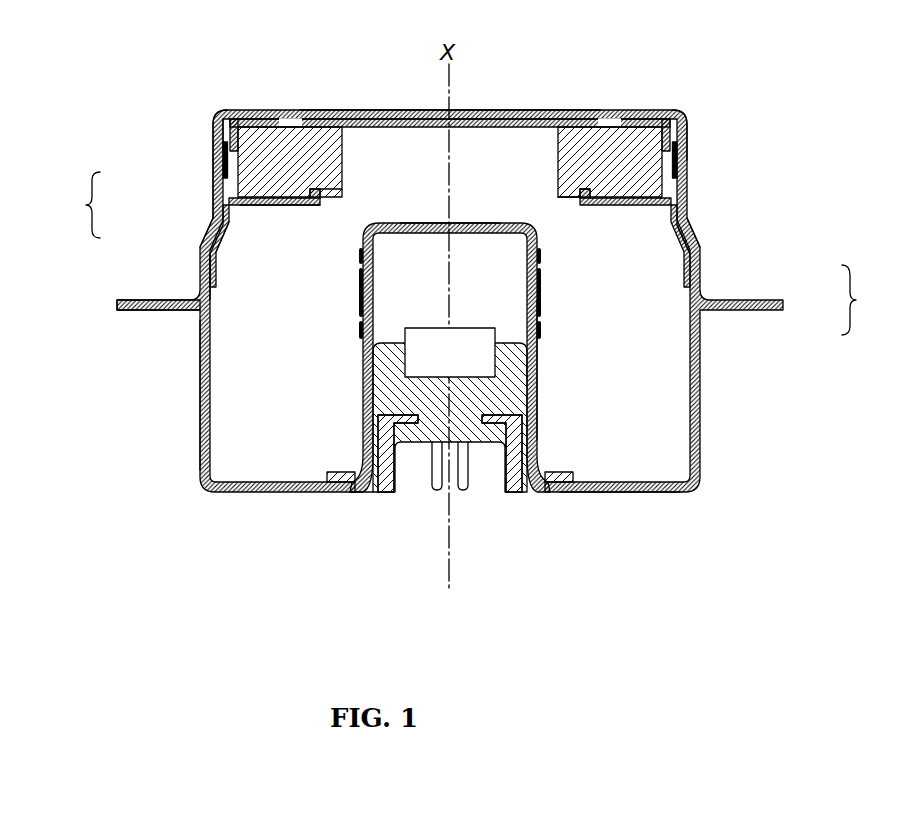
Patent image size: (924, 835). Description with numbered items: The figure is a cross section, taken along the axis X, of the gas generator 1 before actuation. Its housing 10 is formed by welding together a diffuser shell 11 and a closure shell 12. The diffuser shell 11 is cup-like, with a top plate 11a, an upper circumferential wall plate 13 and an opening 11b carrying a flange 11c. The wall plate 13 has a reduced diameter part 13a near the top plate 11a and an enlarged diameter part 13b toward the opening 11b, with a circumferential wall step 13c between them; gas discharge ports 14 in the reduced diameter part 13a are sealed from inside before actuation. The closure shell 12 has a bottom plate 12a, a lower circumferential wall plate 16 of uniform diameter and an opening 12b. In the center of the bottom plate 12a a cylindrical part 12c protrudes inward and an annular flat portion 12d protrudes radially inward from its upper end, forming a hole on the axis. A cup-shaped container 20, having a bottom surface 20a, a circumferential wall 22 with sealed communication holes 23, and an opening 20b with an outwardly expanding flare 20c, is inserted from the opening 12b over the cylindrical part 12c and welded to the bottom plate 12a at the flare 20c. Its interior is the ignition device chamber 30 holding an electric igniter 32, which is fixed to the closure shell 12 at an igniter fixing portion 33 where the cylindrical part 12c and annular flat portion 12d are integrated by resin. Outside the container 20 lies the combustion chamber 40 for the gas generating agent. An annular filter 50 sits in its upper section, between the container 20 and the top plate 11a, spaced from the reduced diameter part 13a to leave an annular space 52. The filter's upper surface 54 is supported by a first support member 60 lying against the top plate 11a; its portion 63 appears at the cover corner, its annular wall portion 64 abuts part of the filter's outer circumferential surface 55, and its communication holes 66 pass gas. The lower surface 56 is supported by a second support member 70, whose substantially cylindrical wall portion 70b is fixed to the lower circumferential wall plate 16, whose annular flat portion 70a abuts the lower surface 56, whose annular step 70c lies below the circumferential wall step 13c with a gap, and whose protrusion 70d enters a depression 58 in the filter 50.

The electronic component 1 is at (536, 70).
The housing 10 is at (865, 300).
The diffuser shell 11 is at (700, 262).
The top plate 11a is at (348, 117).
The opening 11b is at (195, 318).
The flange 11c is at (135, 300).
The closure shell 12 is at (702, 340).
The bottom plate 12a is at (600, 494).
The opening 12b is at (697, 240).
The cylindrical part 12c is at (510, 455).
The annular flat portion 12d is at (403, 444).
The upper circumferential wall plate 13 is at (77, 205).
The reduced diameter part 13a is at (220, 175).
The enlarged diameter part 13b is at (200, 258).
The circumferential wall step 13c is at (220, 200).
The gas discharge ports 14 is at (212, 147).
The lower circumferential wall plate 16 is at (202, 420).
The cup-shaped container 20 is at (462, 220).
The bottom surface 20a is at (418, 223).
The opening 20b is at (365, 486).
The flare 20c is at (330, 493).
The circumferential wall 22 is at (540, 400).
The communication holes 23 is at (362, 322).
The ignition device chamber 30 is at (500, 292).
The electric igniter 32 is at (466, 366).
The igniter fixing portion 33 is at (382, 388).
The combustion chamber 40 is at (613, 364).
The annular filter 50 is at (560, 185).
The annular space 52 is at (683, 118).
The upper surface 54 is at (583, 118).
The outer circumferential surface 55 is at (688, 195).
The lower surface 56 is at (572, 205).
The depression 58 is at (320, 200).
The first support member 60 is at (484, 112).
The inner wall of cover 63 is at (228, 118).
The annular wall portion 64 is at (212, 128).
The communication holes 66 is at (292, 120).
The second support member 70 is at (230, 252).
The annular flat portion 70a is at (300, 207).
The substantially cylindrical wall portion 70b is at (218, 276).
The annular step 70c is at (235, 215).
The protrusion 70d is at (318, 190).